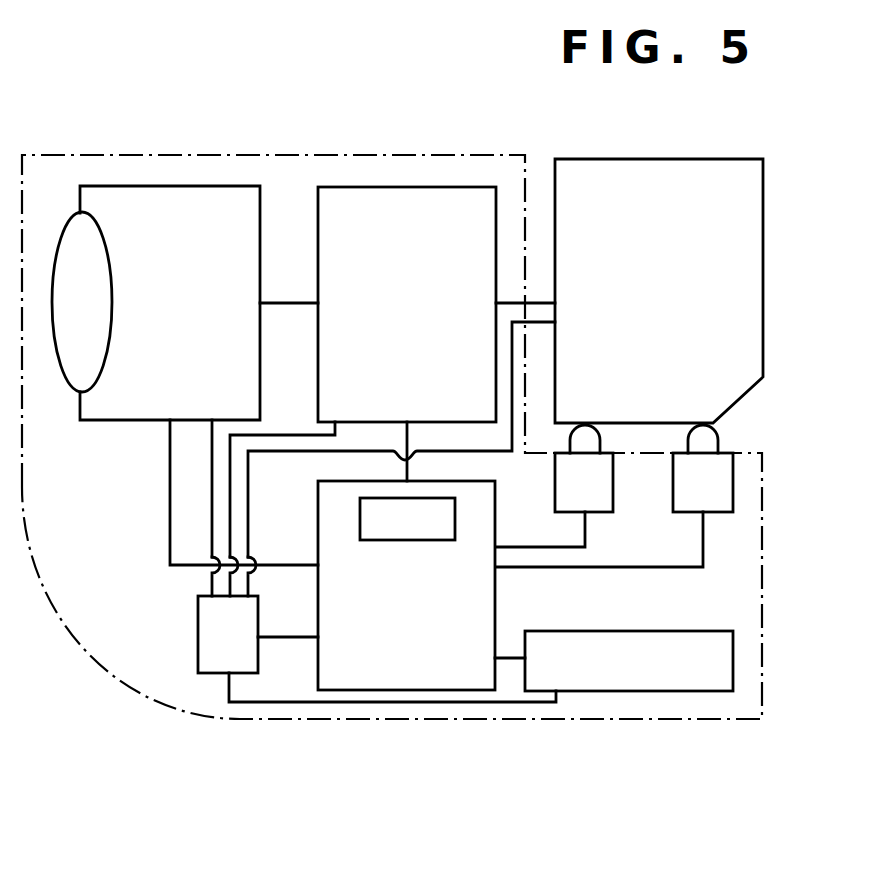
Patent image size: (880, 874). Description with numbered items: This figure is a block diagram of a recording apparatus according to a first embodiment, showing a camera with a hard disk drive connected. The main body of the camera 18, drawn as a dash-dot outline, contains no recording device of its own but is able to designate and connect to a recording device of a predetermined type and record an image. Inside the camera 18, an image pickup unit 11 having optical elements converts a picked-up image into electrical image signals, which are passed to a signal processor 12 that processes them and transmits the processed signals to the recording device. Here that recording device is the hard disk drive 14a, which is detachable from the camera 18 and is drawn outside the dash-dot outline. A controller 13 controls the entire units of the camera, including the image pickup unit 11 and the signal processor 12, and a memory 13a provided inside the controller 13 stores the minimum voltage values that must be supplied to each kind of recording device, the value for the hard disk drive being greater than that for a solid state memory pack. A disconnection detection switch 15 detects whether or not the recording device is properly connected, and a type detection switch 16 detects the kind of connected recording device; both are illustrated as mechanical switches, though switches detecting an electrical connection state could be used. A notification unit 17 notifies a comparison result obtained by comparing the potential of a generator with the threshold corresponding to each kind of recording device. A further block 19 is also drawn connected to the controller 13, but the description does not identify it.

The image pickup unit 11 is at (160, 195).
The signal processor 12 is at (355, 195).
The controller 13 is at (490, 620).
The memory 13a is at (365, 520).
The hard disk drive 14a is at (600, 170).
The disconnection detection switch 15 is at (600, 513).
The type detection switch 16 is at (717, 513).
The notification unit 17 is at (622, 637).
The main body of camera 18 is at (204, 716).
The drive circuit 19 is at (205, 622).